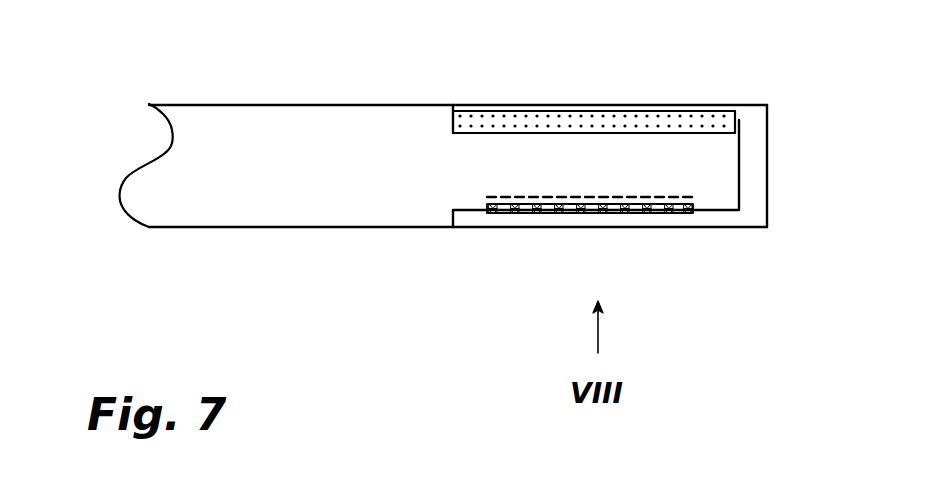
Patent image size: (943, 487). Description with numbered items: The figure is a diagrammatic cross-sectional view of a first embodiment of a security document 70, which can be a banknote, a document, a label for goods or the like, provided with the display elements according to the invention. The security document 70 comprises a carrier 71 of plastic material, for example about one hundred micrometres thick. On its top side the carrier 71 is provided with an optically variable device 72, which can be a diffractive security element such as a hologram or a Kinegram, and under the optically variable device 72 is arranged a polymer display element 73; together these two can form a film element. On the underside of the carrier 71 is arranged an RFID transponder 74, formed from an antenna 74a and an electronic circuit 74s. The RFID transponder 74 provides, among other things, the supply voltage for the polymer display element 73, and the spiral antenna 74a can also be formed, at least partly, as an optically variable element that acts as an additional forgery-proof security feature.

The security document 70 is at (111, 103).
The carrier 71 is at (277, 213).
The optically variable device 72 is at (618, 111).
The polymer display element 73 is at (673, 122).
The RFID transponder 74 is at (775, 197).
The antenna 74a is at (495, 215).
The electronic circuit 74s is at (697, 201).